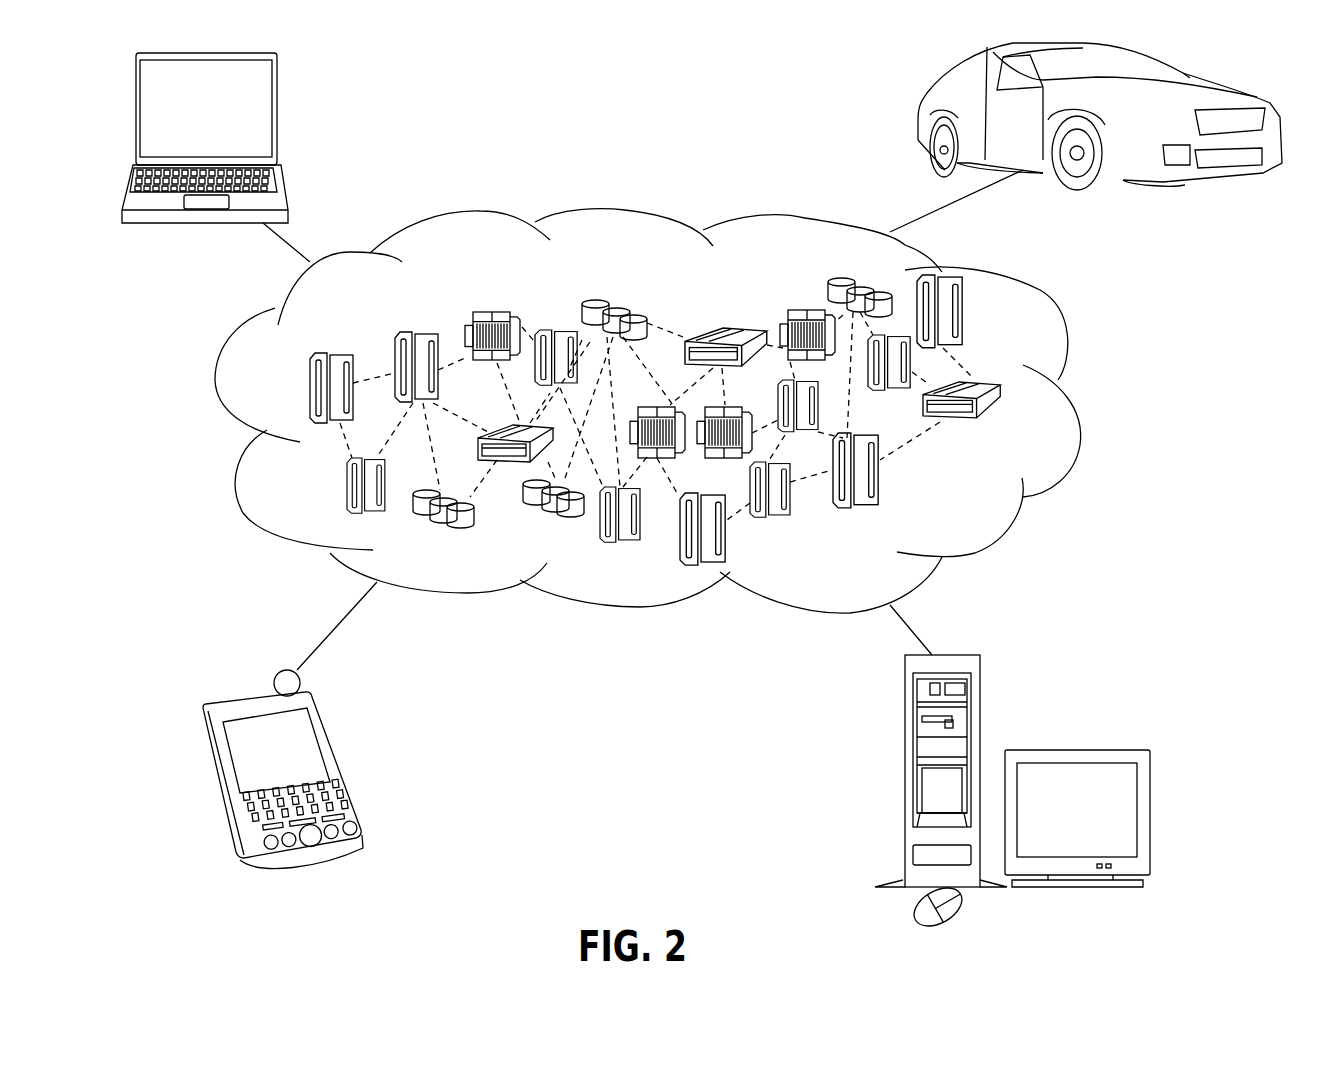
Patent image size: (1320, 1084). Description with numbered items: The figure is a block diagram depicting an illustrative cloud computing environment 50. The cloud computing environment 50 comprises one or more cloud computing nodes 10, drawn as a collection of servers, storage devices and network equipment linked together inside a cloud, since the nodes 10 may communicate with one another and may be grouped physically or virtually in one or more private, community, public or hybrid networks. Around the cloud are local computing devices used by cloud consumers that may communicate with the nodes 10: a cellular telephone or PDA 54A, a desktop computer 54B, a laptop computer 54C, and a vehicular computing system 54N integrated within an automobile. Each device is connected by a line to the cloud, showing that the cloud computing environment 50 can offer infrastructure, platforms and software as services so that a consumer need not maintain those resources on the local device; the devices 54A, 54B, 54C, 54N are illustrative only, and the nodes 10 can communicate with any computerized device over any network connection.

The cloud computing environment 50 is at (1068, 400).
The cloud computing nodes 10 is at (980, 503).
The cellular telephone or PDA 54A is at (330, 732).
The desktop computer 54B is at (903, 716).
The laptop computer 54C is at (277, 92).
The vehicular computing system 54N is at (918, 108).